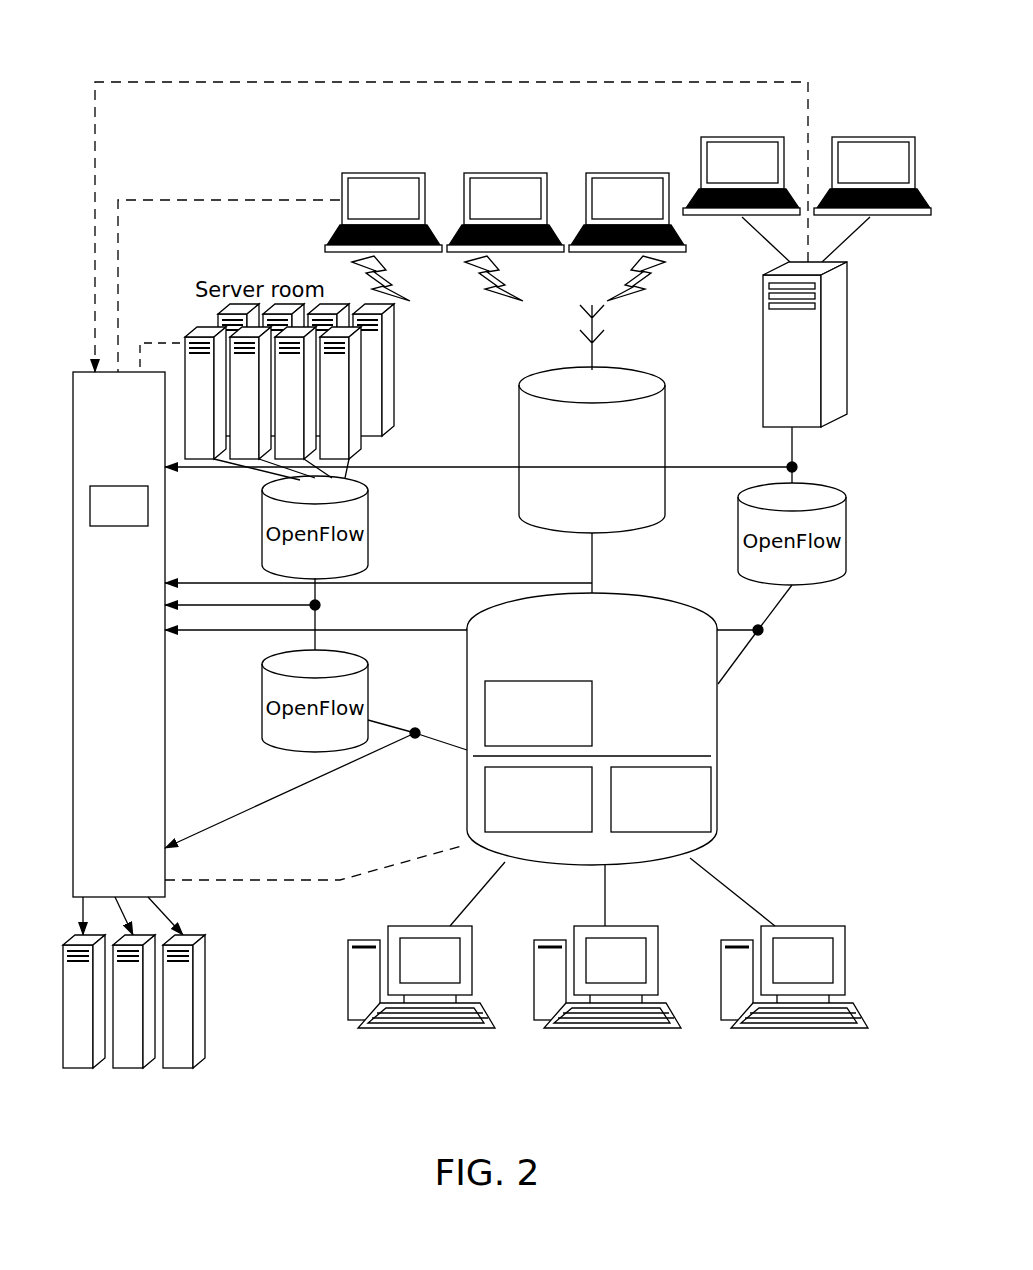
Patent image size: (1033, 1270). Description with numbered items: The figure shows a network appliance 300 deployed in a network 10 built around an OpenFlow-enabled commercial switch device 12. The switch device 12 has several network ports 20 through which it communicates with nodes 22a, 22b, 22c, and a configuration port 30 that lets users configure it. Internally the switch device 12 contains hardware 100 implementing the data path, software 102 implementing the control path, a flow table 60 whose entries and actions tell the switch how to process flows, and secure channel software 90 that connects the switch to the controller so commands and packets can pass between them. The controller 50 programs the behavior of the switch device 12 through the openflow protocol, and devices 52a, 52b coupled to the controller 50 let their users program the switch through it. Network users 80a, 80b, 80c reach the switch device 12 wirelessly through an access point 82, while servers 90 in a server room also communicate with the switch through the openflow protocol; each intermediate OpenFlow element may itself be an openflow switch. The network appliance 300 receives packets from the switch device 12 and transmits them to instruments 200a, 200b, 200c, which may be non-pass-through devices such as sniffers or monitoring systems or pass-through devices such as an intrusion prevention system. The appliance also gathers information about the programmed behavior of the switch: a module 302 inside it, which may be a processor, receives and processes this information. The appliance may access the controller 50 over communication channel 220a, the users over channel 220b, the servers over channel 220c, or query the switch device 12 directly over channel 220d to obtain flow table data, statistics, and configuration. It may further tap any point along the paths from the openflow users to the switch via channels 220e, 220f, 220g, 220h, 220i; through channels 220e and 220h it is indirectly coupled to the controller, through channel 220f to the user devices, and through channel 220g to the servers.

The network 10 is at (333, 63).
The switch device 12 is at (717, 770).
The network ports 20 is at (598, 588).
The node 22a is at (393, 1030).
The node 22b is at (573, 1030).
The node 22c is at (767, 1030).
The configuration port 30 is at (717, 685).
The controller 50 is at (848, 293).
The device 52a is at (735, 134).
The device 52b is at (865, 134).
The flow table 60 is at (717, 816).
The network user 80a is at (378, 170).
The network user 80b is at (497, 170).
The network user 80c is at (616, 170).
The access point 82 is at (665, 430).
The server 90 is at (394, 373).
The hardware 100 is at (485, 798).
The software 102 is at (485, 702).
The instrument 200a is at (73, 1070).
The instrument 200b is at (135, 1070).
The instrument 200c is at (193, 1070).
The communication channel 220a is at (165, 80).
The communication channel 220b is at (180, 198).
The communication channel 220c is at (168, 341).
The communication channel 220d is at (232, 881).
The communication channel 220e is at (445, 466).
The communication channel 220f is at (450, 582).
The communication channel 220g is at (220, 603).
The communication channel 220h is at (420, 629).
The communication channel 220i is at (260, 805).
The network appliance 300 is at (165, 522).
The module 302 is at (119, 506).